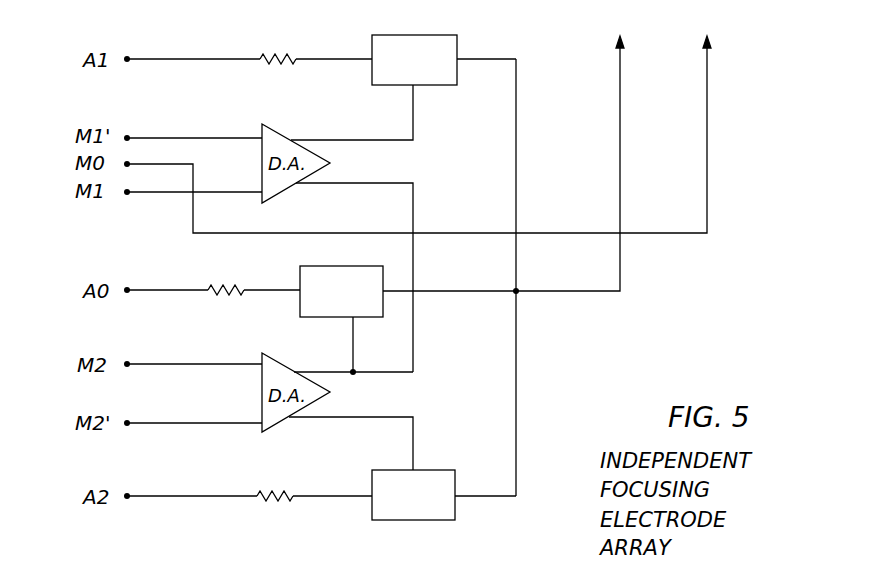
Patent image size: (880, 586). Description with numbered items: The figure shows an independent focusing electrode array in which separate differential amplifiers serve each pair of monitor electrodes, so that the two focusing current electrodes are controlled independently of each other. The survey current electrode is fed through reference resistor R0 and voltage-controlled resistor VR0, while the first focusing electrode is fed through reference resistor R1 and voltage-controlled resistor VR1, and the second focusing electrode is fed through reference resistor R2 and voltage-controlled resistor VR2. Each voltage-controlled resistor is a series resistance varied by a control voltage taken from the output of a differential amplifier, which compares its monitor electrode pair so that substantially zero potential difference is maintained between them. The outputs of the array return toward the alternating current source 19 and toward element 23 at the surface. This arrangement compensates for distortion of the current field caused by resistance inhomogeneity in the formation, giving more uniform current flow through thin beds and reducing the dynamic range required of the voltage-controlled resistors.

The alternating current source 19 is at (523, 151).
The focusing electrode (connection TO 23) 23 is at (441, 122).
The reference resistor R1 is at (249, 43).
The reference resistor R0 is at (213, 277).
The reference resistor R2 is at (249, 514).
The voltage-controlled resistor VR1 is at (414, 60).
The voltage-controlled resistor VR0 is at (341, 291).
The voltage-controlled resistor VR2 is at (413, 495).